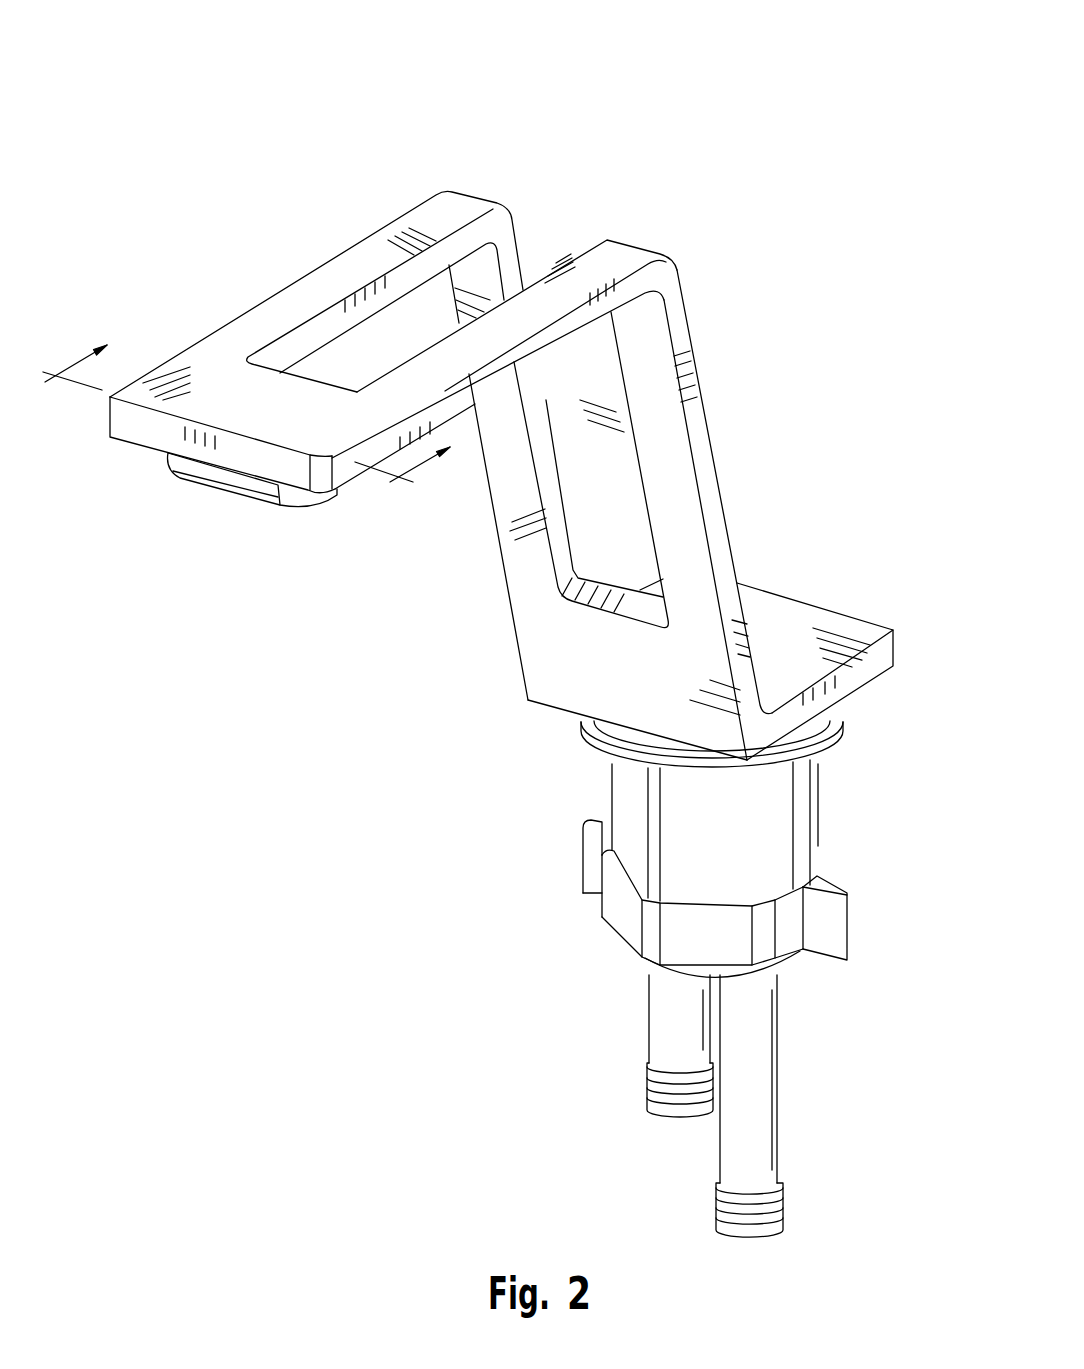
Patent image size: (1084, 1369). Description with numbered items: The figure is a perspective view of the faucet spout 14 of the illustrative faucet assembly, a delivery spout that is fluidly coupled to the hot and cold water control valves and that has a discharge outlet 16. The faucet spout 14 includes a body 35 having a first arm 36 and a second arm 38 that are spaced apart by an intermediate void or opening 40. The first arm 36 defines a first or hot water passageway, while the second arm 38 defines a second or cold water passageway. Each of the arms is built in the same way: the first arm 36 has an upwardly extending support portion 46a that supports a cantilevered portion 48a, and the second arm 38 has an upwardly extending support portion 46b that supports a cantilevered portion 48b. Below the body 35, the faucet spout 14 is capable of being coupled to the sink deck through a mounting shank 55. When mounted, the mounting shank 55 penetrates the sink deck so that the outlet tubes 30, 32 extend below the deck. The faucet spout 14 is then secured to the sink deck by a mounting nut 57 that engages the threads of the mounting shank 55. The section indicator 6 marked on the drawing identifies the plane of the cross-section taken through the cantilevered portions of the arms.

The faucet assembly 14 is at (727, 128).
The mounting bracket 40 is at (575, 222).
The top plate of bracket 36 is at (512, 230).
The vertical plate of bracket 38 is at (665, 275).
The base plate of bracket 35 is at (683, 340).
The slot in top plate 48a is at (318, 290).
The slot in vertical plate 48b is at (567, 330).
The first leg of vertical plate 46a is at (505, 597).
The second leg of vertical plate 46b is at (720, 533).
The mounting pad 16 is at (231, 500).
The collar body 55 is at (826, 812).
The mounting nut 57 is at (590, 902).
The first supply tube 30 is at (663, 1020).
The second supply tube 32 is at (763, 1098).
The section line 6- 6 is at (255, 396).